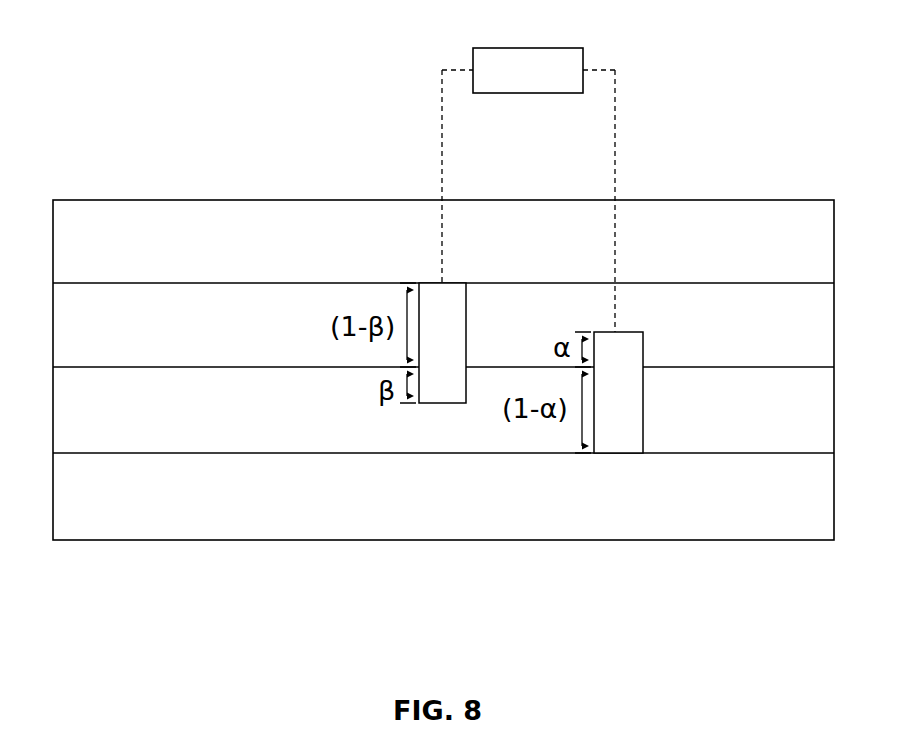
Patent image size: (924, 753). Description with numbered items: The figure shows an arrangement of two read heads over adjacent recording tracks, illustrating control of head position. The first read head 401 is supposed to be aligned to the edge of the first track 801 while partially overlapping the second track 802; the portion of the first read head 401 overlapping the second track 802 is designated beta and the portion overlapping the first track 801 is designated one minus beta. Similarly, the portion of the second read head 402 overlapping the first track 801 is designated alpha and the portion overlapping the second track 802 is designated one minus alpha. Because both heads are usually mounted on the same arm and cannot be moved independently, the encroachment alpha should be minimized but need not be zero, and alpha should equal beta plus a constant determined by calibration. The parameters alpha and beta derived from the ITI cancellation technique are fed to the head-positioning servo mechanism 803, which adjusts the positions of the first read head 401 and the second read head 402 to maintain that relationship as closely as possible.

The read head H1 401 is at (452, 288).
The read head H2 402 is at (627, 342).
The Track 1 801 is at (827, 320).
The Track 2 802 is at (827, 407).
The head-positioning servo mechanism 803 is at (547, 48).